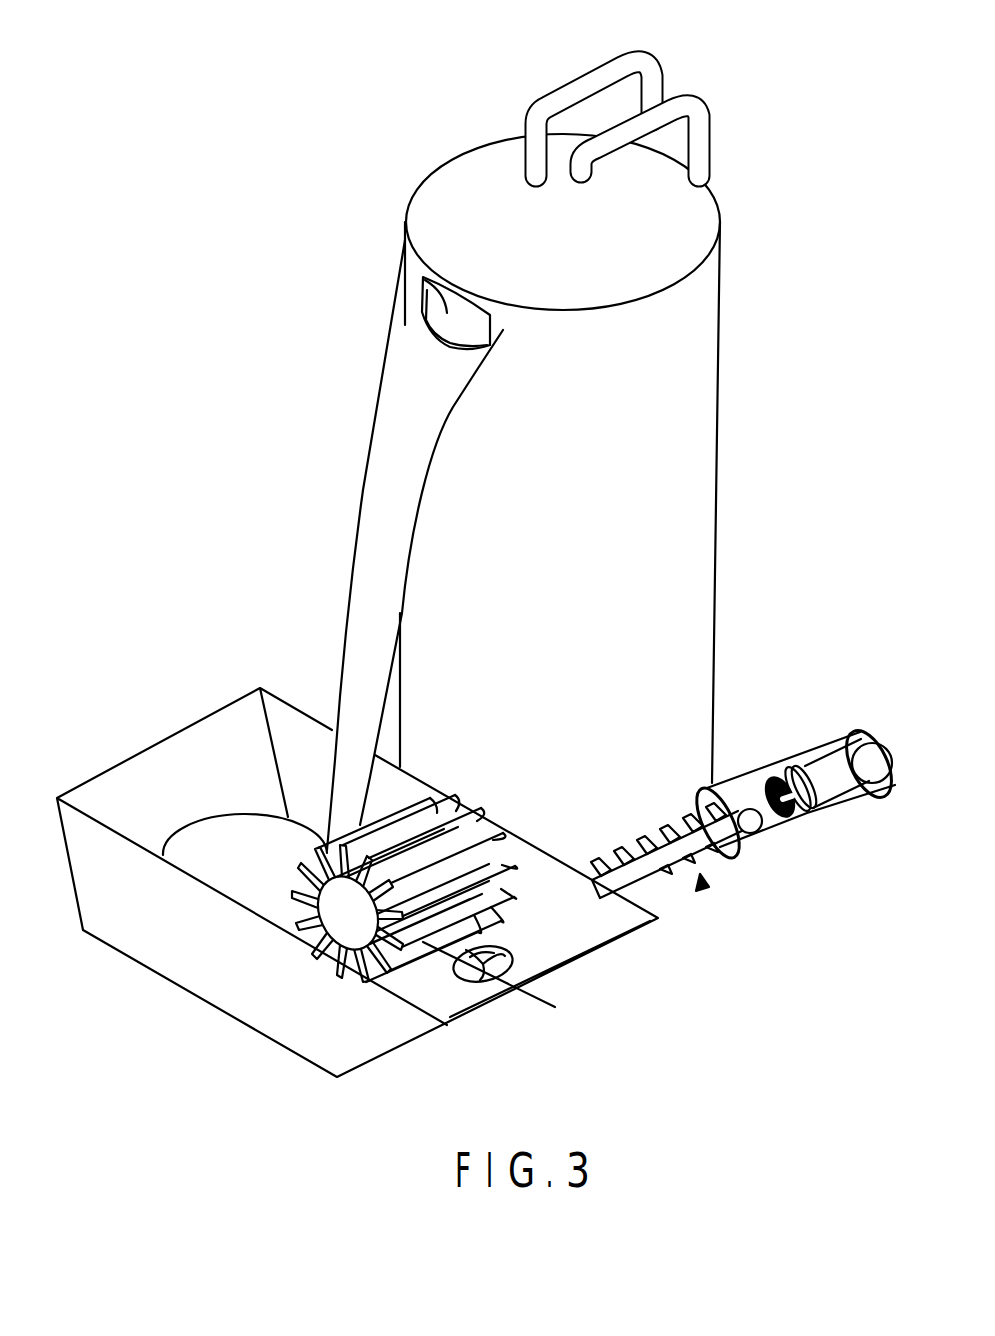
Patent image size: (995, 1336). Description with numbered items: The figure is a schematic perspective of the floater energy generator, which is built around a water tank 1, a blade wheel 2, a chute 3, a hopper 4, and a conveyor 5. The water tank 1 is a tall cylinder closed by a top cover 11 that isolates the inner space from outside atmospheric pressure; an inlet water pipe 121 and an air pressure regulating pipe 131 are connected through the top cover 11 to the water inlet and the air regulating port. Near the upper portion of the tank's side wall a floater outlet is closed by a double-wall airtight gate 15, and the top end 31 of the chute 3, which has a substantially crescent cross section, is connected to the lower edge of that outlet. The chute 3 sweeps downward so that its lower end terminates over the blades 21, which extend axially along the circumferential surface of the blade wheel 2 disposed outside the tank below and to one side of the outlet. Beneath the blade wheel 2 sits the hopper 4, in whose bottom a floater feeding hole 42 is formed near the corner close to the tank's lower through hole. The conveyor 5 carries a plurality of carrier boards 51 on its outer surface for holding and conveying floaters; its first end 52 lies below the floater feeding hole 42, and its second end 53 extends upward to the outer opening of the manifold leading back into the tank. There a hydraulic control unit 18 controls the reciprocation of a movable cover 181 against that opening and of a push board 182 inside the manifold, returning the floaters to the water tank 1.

The water tank 1 is at (708, 492).
The top cover 11 is at (462, 187).
The air pressure regulating pipe 131 is at (580, 93).
The inlet water pipe 121 is at (697, 123).
The double-wall airtight gate 15 is at (423, 288).
The top end of the chute 31 is at (423, 327).
The chute 3 is at (383, 427).
The hopper 4 is at (230, 720).
The blades 21 is at (385, 940).
The blade wheel 2 is at (340, 918).
The floater feeding hole 42 is at (510, 980).
The first end of the conveyor 52 is at (490, 980).
The conveyor 5 is at (704, 885).
The carrier boards 51 is at (670, 812).
The second end of the conveyor 53 is at (750, 806).
The hydraulic control unit 18 is at (830, 763).
The movable cover 181 is at (803, 760).
The push board 182 is at (790, 820).